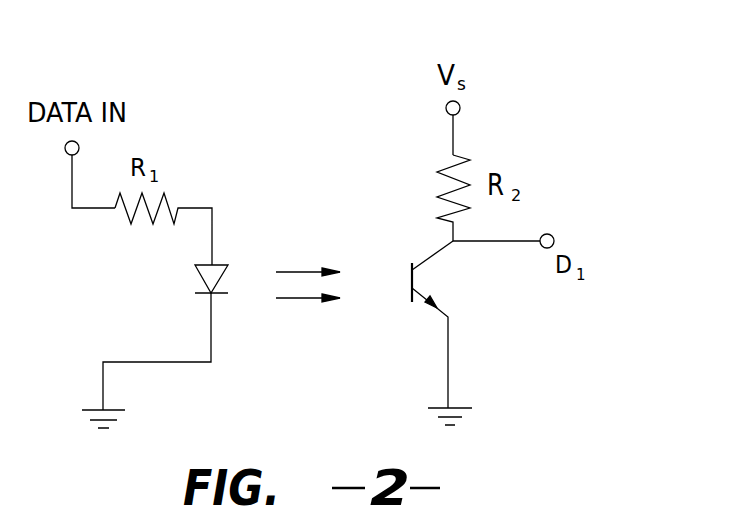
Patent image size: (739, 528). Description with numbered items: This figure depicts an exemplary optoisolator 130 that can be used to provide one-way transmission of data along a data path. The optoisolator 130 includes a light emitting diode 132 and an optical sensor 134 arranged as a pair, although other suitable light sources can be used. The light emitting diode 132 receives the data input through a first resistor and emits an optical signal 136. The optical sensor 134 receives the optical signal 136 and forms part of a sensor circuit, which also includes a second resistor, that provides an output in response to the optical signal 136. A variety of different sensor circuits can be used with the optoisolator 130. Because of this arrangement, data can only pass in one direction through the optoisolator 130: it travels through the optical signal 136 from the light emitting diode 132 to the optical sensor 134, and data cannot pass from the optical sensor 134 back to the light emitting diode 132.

The optoisolator 130 is at (575, 108).
The light emitting diode 132 is at (198, 275).
The optical sensor 134 is at (413, 280).
The optical signal 136 is at (297, 272).